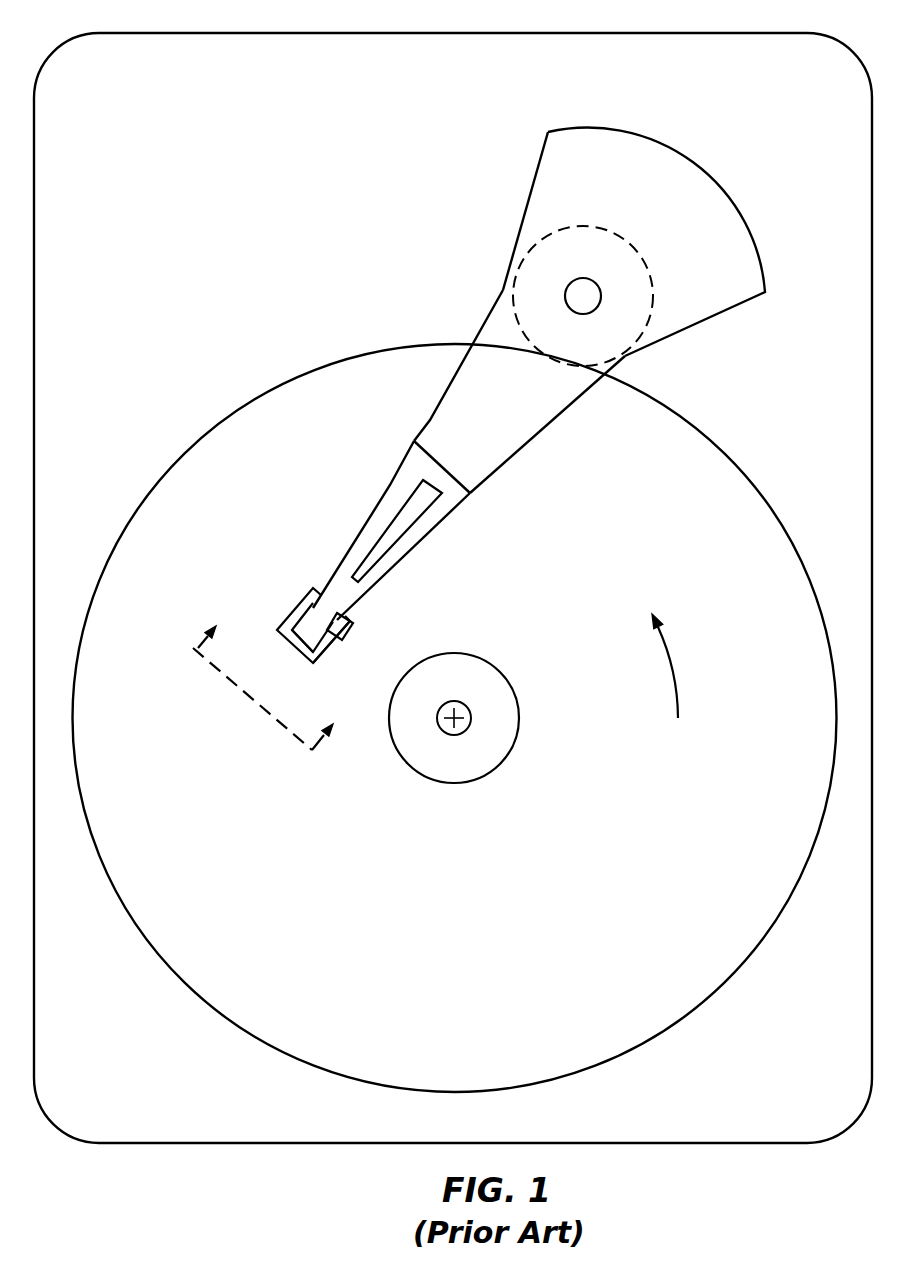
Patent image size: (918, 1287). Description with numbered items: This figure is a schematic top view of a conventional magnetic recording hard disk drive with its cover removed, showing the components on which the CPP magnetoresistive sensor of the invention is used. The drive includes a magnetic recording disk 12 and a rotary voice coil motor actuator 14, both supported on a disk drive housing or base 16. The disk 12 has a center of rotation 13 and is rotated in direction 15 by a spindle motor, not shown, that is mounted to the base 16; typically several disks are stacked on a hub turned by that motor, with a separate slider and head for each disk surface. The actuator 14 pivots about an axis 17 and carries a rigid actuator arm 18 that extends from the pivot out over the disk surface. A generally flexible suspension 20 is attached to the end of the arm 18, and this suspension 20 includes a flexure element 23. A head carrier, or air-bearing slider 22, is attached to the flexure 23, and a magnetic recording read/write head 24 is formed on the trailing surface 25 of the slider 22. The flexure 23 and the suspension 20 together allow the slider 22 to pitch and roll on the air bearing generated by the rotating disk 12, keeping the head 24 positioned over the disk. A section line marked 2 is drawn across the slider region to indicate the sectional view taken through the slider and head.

The magnetic recording disk 12 is at (462, 991).
The center of rotation 13 is at (471, 711).
The rotary voice coil motor actuator 14 is at (697, 160).
The direction of rotation 15 is at (678, 683).
The disk drive housing or base 16 is at (740, 32).
The pivot axis 17 is at (565, 296).
The rigid actuator arm 18 is at (447, 397).
The suspension 20 is at (398, 483).
The air-bearing slider 22 is at (305, 597).
The flexure element 23 is at (327, 633).
The magnetic recording read/write head 24 is at (320, 667).
The trailing surface 25 is at (287, 643).
The section line 2- 2 is at (275, 672).